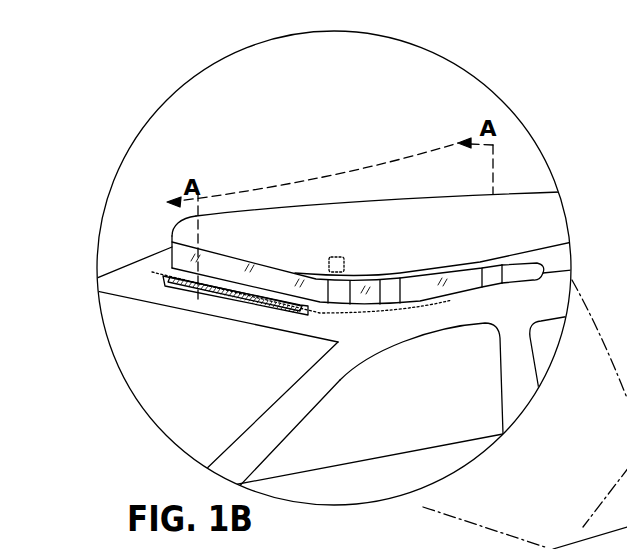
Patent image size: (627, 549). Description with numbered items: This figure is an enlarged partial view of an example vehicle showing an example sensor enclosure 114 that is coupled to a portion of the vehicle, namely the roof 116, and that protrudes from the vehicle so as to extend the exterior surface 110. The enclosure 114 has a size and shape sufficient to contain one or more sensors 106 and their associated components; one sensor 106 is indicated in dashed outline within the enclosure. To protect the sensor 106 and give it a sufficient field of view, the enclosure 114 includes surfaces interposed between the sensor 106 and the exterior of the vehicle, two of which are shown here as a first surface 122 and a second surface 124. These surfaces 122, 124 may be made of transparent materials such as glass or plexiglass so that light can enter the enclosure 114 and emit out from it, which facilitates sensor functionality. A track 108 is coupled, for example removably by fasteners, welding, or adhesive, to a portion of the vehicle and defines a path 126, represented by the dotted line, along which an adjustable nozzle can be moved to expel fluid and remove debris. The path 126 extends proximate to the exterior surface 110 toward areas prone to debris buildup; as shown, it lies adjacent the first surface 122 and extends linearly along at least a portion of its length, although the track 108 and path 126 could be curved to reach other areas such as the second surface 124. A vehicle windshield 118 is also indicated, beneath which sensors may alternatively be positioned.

The sensor 106 is at (342, 257).
The track 108 is at (306, 314).
The exterior surface 110 is at (476, 239).
The enclosure 114 is at (300, 206).
The roof 116 is at (130, 275).
The vehicle windshield 118 is at (525, 414).
The first surface 122 is at (242, 272).
The second surface 124 is at (417, 288).
The path 126 is at (342, 315).